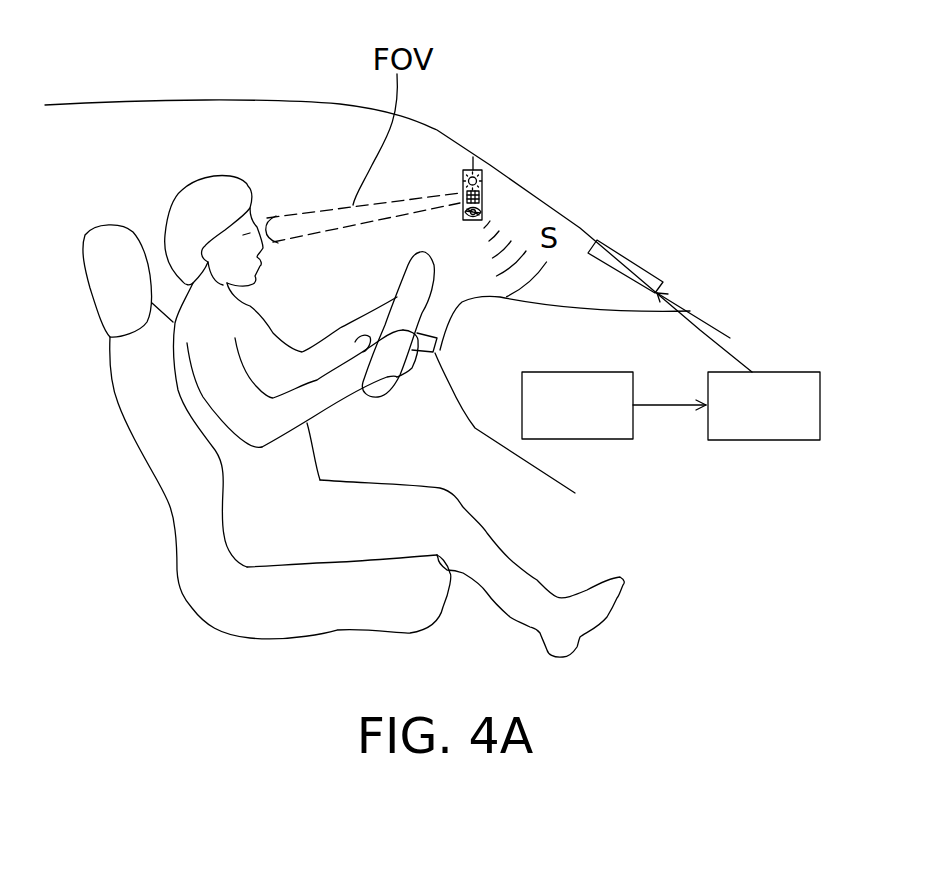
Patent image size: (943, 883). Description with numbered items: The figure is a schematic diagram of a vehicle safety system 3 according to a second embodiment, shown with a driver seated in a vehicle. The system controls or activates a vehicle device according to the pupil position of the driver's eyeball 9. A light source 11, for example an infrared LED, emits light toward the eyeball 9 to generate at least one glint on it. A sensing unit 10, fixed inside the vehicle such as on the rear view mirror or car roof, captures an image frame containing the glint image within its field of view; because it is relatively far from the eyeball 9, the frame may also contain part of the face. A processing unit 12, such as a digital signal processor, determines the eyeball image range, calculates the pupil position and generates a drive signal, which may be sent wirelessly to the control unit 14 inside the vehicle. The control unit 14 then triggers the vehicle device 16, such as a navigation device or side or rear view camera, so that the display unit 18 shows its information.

The vehicle safety system 3 is at (678, 135).
The eyeball 9 is at (246, 186).
The sensing unit 10 is at (544, 158).
The light source 11 is at (478, 172).
The processing unit 12 is at (484, 208).
The control unit 14 is at (600, 439).
The vehicle device 16 is at (797, 372).
The display unit 18 is at (630, 270).